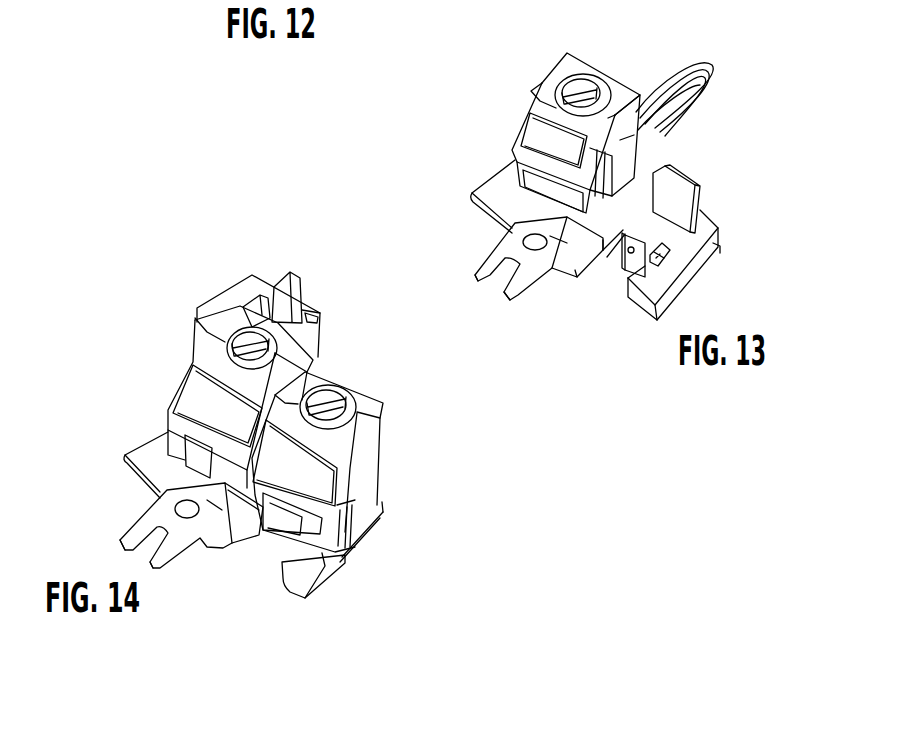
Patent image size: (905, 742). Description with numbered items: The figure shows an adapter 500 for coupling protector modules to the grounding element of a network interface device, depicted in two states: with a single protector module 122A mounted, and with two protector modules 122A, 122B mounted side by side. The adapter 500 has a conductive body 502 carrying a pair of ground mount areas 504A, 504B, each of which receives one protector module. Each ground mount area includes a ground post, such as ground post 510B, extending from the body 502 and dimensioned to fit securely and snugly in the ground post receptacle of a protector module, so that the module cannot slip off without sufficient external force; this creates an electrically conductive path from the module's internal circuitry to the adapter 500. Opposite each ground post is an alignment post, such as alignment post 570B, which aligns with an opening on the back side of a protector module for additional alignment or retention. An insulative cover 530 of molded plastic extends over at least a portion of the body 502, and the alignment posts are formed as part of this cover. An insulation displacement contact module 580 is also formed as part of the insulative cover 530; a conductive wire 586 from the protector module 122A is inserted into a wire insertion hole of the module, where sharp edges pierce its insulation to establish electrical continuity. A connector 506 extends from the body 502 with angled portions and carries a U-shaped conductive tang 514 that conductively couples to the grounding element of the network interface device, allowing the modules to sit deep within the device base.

In FIG. 13, the adapter 500 is at (455, 211).
In FIG. 14, the adapter 500 is at (112, 519).
In FIG. 13, the protector module 122A is at (540, 82).
In FIG. 14, the protector module 122A is at (217, 362).
In FIG. 14, the protector module 122B is at (388, 405).
In FIG. 13, the ground mount area 504A is at (508, 182).
In FIG. 14, the ground mount area 504A is at (157, 441).
In FIG. 13, the ground mount area 504B is at (672, 230).
In FIG. 14, the ground mount area 504B is at (362, 541).
In FIG. 13, the connector 506 is at (540, 286).
In FIG. 14, the connector 506 is at (216, 564).
In FIG. 13, the U-shaped conductive tang 514 is at (518, 302).
In FIG. 14, the U-shaped conductive tang 514 is at (160, 570).
In FIG. 13, the body 502 is at (672, 252).
In FIG. 13, the ground post 510B is at (622, 264).
In FIG. 13, the alignment post 570B is at (677, 190).
In FIG. 13, the conductive wire 586 is at (705, 95).
In FIG. 14, the insulation displacement contact (IDC) module 580 is at (243, 297).
In FIG. 14, the insulative cover 530 is at (125, 457).